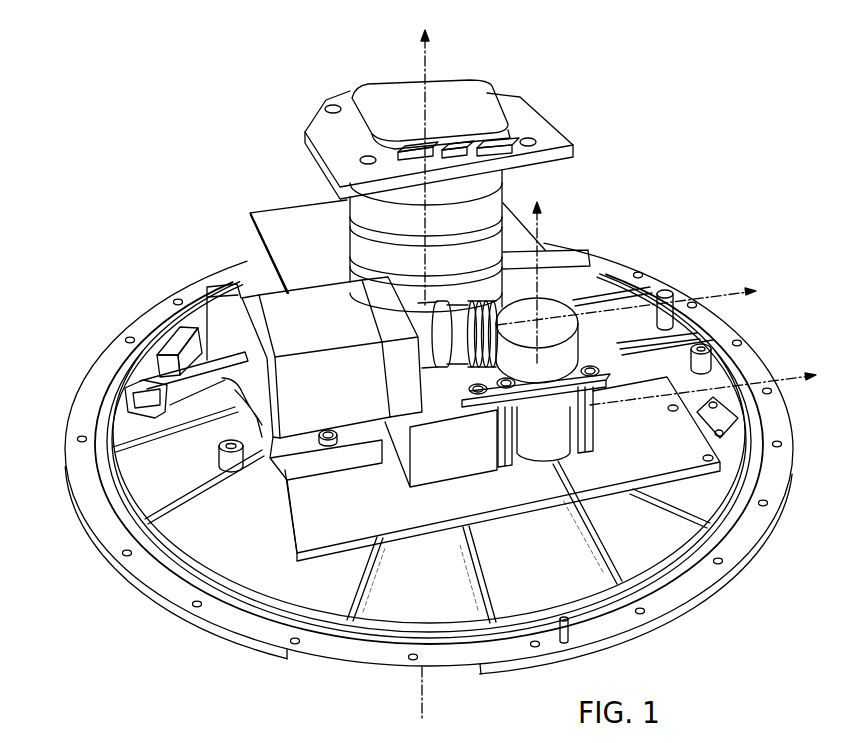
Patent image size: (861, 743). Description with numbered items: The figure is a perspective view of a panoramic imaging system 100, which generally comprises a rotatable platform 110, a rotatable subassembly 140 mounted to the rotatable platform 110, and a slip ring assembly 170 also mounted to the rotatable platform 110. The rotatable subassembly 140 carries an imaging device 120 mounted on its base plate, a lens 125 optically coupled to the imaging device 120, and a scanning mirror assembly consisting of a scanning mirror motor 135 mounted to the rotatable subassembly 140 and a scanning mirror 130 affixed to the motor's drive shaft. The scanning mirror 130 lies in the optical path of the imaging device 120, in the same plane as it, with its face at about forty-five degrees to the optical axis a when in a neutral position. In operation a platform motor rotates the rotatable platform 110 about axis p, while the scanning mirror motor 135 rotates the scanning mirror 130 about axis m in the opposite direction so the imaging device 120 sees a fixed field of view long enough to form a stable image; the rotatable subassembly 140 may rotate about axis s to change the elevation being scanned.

The panoramic imaging system 100 is at (117, 215).
The rotatable platform 110 is at (248, 586).
The imaging device 120 is at (320, 294).
The lens 125 is at (457, 365).
The scanning mirror 130 is at (555, 314).
The scanning mirror motor 135 is at (560, 446).
The rotatable subassembly 140 is at (515, 494).
The slip ring assembly 170 is at (322, 161).